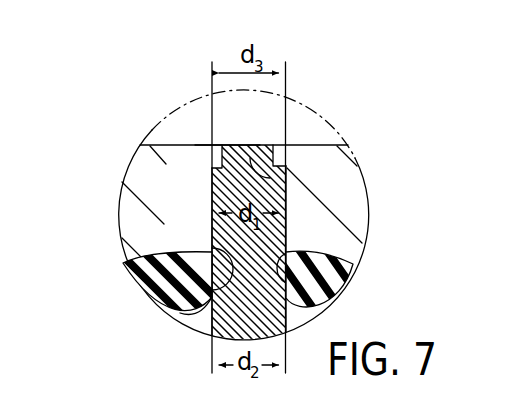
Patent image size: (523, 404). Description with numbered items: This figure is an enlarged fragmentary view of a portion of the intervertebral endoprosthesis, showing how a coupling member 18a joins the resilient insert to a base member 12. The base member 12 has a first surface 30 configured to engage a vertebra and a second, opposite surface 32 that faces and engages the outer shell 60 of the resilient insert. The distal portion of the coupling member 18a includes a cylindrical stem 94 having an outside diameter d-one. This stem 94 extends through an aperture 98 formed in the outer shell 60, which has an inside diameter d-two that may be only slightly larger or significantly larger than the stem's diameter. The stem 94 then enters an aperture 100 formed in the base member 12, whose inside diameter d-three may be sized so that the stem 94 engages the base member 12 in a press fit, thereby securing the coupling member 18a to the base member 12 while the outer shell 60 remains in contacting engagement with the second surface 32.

The base member 12 is at (119, 212).
The coupling member 18a is at (226, 141).
The first surface 30 is at (162, 145).
The second surface 32 is at (148, 292).
The outer shell 60 is at (172, 312).
The stem 94 is at (212, 184).
The aperture 98 is at (212, 248).
The aperture 100 is at (250, 158).